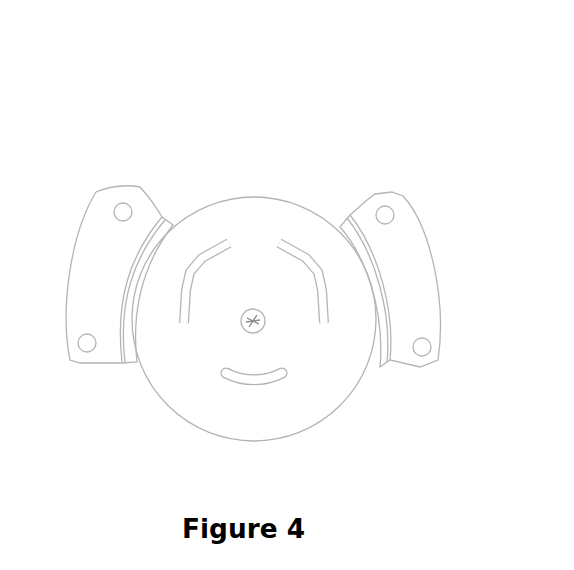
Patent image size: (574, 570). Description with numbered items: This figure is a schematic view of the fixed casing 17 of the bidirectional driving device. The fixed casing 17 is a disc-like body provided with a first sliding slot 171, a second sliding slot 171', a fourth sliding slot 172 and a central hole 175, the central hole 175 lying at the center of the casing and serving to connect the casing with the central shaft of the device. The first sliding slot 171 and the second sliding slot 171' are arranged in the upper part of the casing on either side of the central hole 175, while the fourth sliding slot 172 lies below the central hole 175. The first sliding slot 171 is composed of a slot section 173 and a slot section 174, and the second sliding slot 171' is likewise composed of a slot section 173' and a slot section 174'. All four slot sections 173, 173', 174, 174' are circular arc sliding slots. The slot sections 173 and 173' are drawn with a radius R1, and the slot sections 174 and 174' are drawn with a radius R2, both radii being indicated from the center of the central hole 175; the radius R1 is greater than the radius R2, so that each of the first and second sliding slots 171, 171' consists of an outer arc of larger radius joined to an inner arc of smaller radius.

The fixed casing 17 is at (204, 97).
The first sliding slot 171 is at (193, 225).
The second sliding slot 171' is at (333, 228).
The fourth sliding slot 172 is at (220, 381).
The slot section 173 is at (104, 272).
The slot section 173' is at (409, 270).
The slot section 174 is at (89, 289).
The slot section 174' is at (410, 291).
The central hole 175 is at (265, 320).
The radius of slot sections R1 is at (228, 260).
The radius of slot sections R2 is at (253, 321).